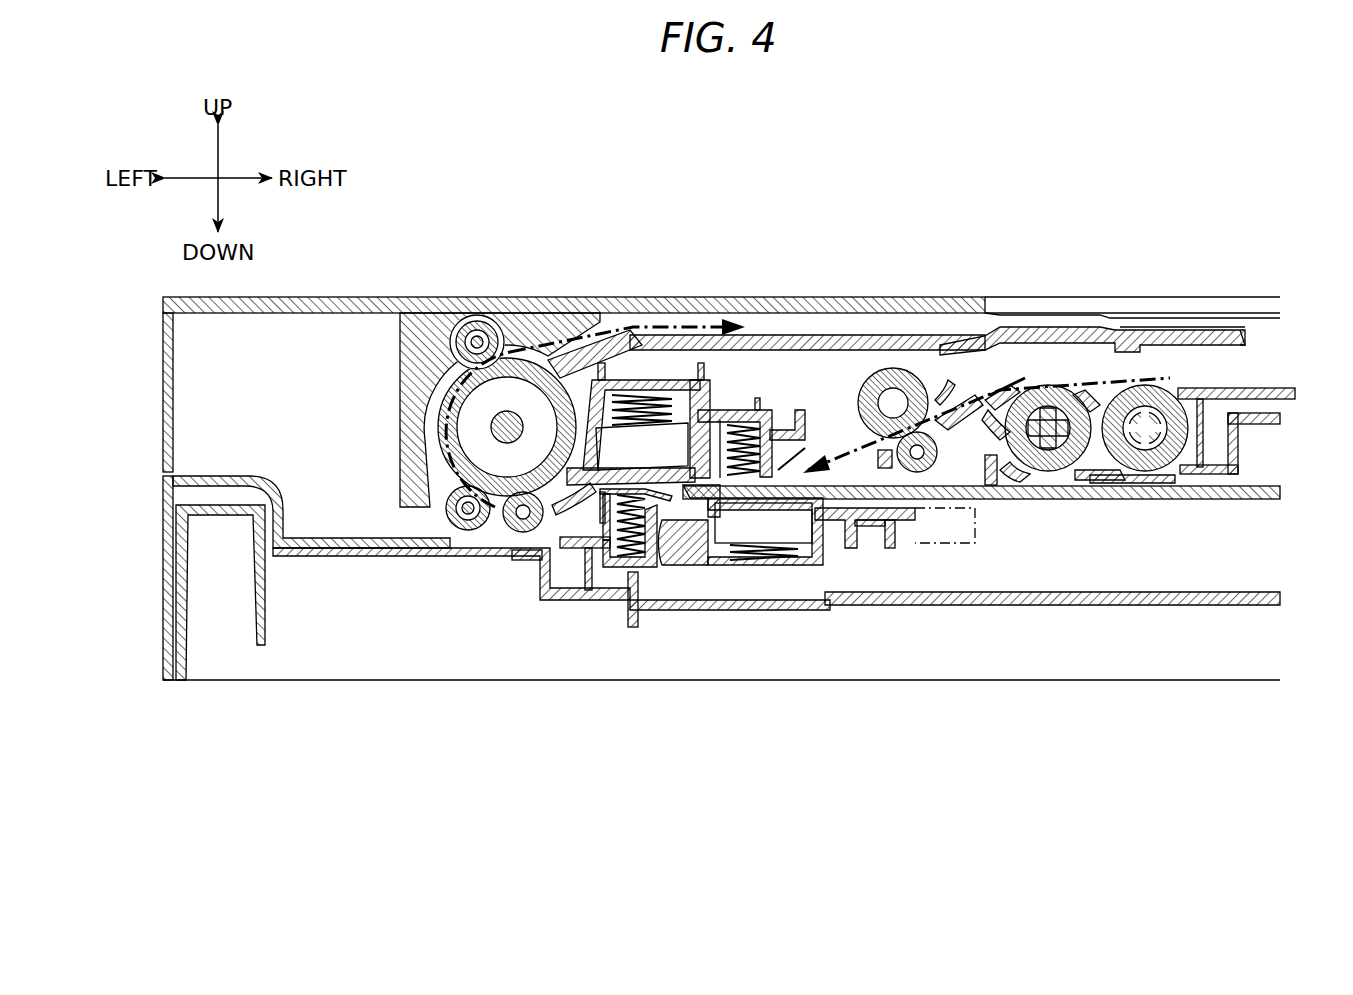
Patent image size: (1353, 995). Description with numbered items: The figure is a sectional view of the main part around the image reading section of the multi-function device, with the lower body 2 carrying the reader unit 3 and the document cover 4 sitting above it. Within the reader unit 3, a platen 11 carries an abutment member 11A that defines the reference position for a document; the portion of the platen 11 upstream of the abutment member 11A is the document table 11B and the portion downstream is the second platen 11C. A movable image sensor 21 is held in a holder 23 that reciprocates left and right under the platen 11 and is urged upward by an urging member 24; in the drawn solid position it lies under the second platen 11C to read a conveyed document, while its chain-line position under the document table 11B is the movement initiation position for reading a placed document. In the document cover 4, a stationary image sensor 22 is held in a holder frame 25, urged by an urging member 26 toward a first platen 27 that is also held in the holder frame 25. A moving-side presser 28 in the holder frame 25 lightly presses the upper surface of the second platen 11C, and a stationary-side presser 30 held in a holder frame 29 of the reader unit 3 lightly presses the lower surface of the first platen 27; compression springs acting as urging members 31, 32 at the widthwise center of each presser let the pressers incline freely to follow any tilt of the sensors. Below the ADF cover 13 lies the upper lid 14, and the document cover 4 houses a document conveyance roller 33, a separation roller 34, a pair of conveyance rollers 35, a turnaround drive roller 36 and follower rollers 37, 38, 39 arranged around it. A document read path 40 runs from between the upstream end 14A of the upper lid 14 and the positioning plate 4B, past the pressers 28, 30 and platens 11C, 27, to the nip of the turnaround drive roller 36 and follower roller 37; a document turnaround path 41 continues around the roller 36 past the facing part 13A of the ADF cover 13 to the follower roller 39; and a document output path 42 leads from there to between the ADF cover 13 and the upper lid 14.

The frame 2 is at (252, 683).
The reader unit 3 is at (160, 655).
The document cover 4 is at (1062, 288).
The positioning plate 4B is at (1276, 386).
The platen 11 is at (1268, 486).
The abutment member 11A is at (840, 555).
The document table 11B is at (1102, 500).
The second platen 11C is at (720, 568).
The ADF cover 13 is at (898, 297).
The facing part 13A is at (392, 372).
The upper lid 14 is at (1045, 335).
The upstream end 14A is at (1245, 328).
The movable image sensor 21 is at (814, 565).
The stationary image sensor 22 is at (680, 428).
The holder 23 is at (880, 550).
The urging member 24 is at (765, 565).
The holder frame 25 is at (605, 380).
The urging member 26 is at (645, 398).
The first platen 27 is at (588, 556).
The moving-side presser 28 is at (790, 430).
The holder frame 29 is at (650, 545).
The stationary-side presser 30 is at (682, 565).
The urging member 31 is at (745, 420).
The urging member 32 is at (620, 560).
The document conveyance roller 33 is at (1150, 472).
The separation roller 34 is at (1048, 472).
The pair of conveyance rollers 35 is at (908, 366).
The turnaround drive roller 36 is at (522, 358).
The follower roller 37 is at (523, 532).
The follower roller 38 is at (470, 530).
The follower roller 39 is at (472, 322).
The document read path 40 is at (1165, 348).
The document turnaround path 41 is at (425, 415).
The document output path 42 is at (835, 325).